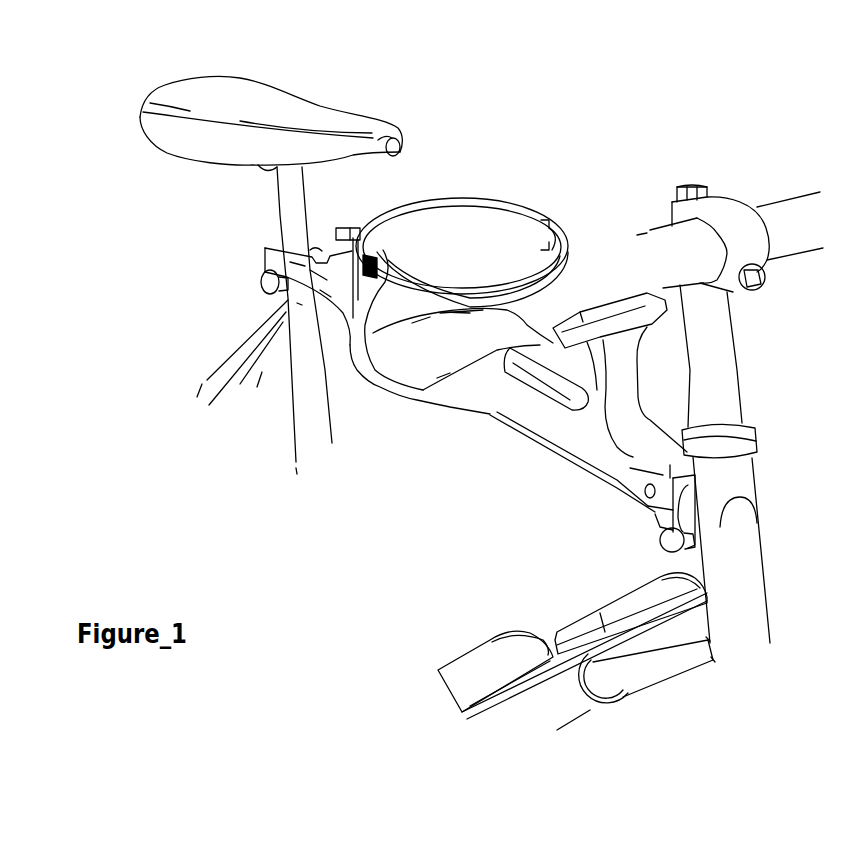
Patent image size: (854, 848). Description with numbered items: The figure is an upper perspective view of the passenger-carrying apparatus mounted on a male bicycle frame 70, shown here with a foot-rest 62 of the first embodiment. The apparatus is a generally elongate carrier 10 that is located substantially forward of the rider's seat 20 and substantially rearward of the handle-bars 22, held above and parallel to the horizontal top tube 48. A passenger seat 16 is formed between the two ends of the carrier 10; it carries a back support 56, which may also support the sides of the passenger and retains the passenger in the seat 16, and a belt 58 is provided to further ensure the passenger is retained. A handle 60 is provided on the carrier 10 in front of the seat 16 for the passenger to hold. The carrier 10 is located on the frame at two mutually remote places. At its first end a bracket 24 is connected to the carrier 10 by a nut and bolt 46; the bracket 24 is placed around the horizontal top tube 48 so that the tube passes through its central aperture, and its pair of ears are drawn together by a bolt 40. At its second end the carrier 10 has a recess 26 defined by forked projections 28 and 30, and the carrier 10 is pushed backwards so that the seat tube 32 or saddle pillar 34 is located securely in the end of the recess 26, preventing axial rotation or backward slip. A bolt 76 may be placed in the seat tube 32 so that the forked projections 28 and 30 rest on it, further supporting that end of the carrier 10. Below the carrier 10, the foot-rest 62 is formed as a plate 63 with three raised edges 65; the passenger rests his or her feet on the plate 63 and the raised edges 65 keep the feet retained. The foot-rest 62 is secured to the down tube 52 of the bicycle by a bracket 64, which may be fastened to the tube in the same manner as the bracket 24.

The carrier 10 is at (513, 187).
The seat 16 is at (430, 363).
The seat 20 is at (342, 123).
The handle-bars 22 is at (778, 215).
The bracket 24 is at (672, 531).
The recess 26 is at (320, 240).
The forked projection 28 is at (314, 243).
The forked projection 30 is at (270, 251).
The seat tube 32 is at (300, 392).
The saddle pillar 34 is at (287, 207).
The bolt 40 is at (662, 543).
The bolt 46 is at (645, 490).
The horizontal top tube 48 is at (755, 485).
The down tube 52 is at (660, 667).
The back support 56 is at (467, 215).
The belt 58 is at (568, 248).
The handle 60 is at (608, 312).
The foot-rest 62 is at (475, 593).
The plate 63 is at (538, 673).
The bracket 64 is at (587, 705).
The raised edges 65 is at (638, 598).
The bicycle frame 70 is at (760, 383).
The bolt 76 is at (262, 282).